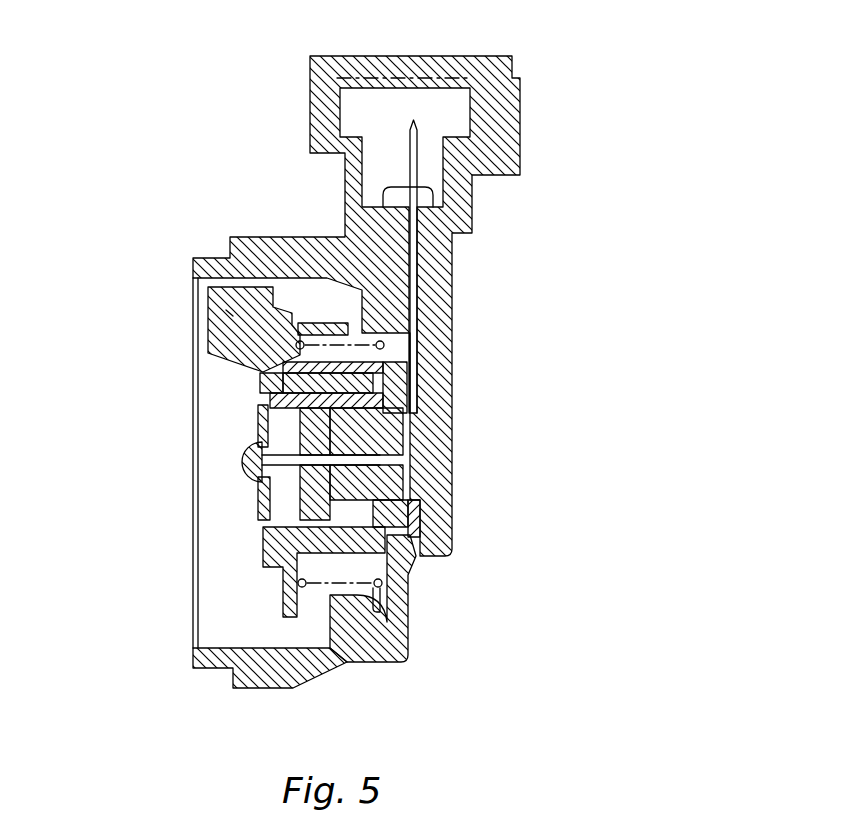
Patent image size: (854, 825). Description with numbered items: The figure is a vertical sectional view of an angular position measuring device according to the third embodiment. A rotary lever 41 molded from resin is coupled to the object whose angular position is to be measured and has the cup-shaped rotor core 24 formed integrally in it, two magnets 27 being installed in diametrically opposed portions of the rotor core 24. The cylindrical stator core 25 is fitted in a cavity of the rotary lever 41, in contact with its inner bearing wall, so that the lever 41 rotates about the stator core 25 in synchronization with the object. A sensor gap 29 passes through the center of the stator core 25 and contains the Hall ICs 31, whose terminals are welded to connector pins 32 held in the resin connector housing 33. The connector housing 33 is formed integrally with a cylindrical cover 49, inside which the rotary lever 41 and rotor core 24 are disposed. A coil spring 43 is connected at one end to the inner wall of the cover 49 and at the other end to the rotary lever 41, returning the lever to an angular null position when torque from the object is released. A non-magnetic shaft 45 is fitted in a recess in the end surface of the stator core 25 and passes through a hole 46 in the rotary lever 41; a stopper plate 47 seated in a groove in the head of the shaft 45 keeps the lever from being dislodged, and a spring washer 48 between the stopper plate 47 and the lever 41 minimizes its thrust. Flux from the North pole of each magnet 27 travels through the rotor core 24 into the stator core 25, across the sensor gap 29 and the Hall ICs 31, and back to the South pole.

The rotor core 24 is at (265, 528).
The stator core 25 is at (405, 423).
The magnet 27 is at (395, 367).
The sensor gap 29 is at (255, 443).
The Hall IC 31 is at (423, 505).
The connector pin 32 is at (410, 152).
The connector housing 33 is at (453, 280).
The rotary lever 41 is at (215, 303).
The coil spring 43 is at (408, 628).
The shaft 45 is at (250, 470).
The hole 46 is at (260, 452).
The stopper plate 47 is at (262, 398).
The spring washer 48 is at (260, 380).
The cover 49 is at (275, 692).